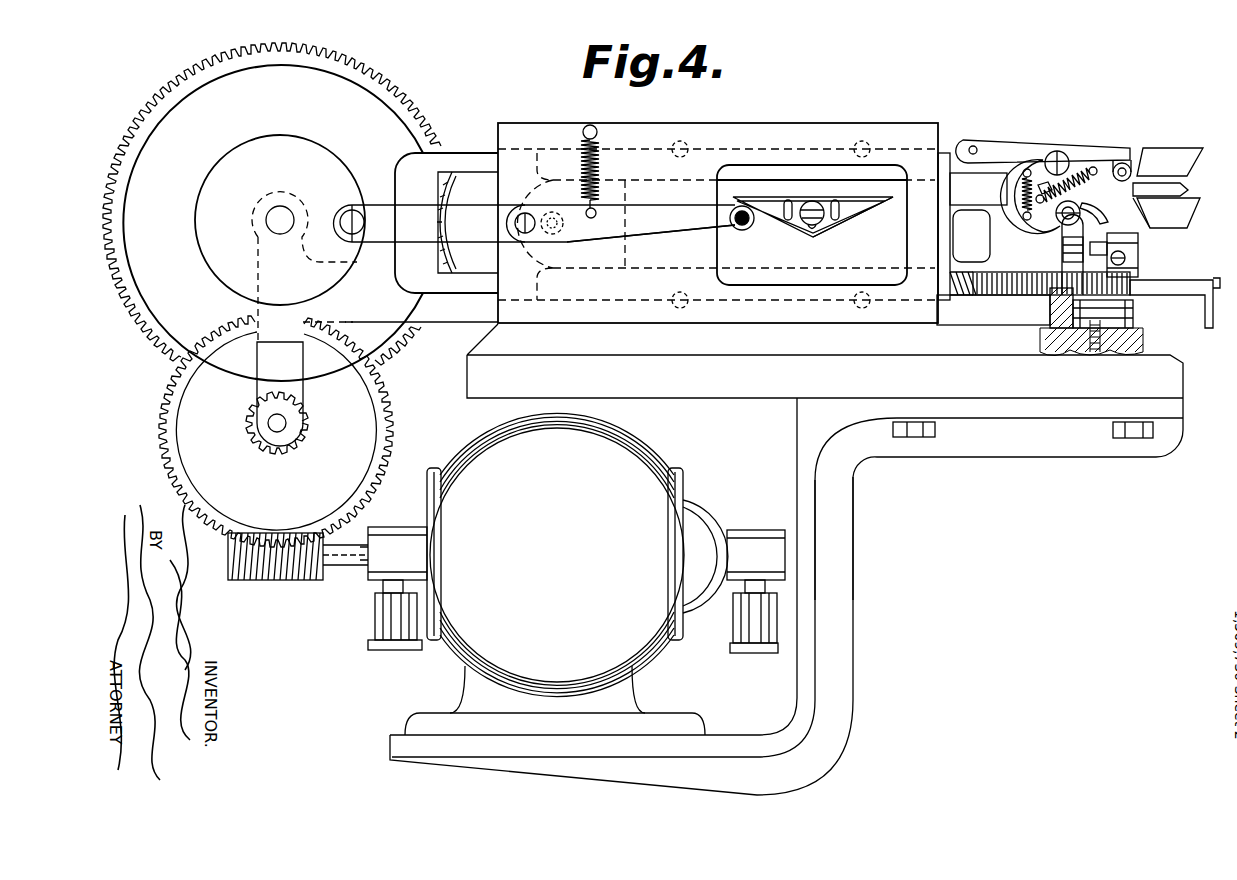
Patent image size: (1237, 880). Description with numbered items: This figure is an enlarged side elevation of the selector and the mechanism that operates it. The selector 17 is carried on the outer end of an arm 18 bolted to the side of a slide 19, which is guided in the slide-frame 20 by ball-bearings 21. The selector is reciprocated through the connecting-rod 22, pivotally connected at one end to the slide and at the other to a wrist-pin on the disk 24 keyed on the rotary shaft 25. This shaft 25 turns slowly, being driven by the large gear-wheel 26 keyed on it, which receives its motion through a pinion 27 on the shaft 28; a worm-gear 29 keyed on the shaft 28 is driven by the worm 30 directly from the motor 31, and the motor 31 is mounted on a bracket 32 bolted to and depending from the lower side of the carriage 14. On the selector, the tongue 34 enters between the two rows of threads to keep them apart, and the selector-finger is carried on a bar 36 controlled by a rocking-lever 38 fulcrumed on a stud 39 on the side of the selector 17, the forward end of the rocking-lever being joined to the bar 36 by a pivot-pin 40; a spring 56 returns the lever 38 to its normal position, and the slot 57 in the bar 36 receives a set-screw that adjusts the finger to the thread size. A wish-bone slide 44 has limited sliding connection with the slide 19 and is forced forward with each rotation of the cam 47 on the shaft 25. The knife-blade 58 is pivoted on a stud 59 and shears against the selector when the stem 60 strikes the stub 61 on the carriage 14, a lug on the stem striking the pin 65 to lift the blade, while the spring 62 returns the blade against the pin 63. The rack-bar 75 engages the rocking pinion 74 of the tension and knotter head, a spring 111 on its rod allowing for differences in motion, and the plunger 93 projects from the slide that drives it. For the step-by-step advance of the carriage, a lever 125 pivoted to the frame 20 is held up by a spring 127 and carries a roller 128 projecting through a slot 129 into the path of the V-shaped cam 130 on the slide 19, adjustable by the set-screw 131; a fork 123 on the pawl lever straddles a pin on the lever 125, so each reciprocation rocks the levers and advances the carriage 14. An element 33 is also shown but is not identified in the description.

The carriage 14 is at (779, 389).
The selector 17 is at (1120, 163).
The arm 18 is at (953, 190).
The slide 19 is at (793, 172).
The slide-frame 20 is at (739, 134).
The ball-bearings 21 is at (685, 143).
The connecting-rod 22 is at (430, 223).
The disk 24 is at (285, 143).
The rotary shaft 25 is at (274, 221).
The large gear-wheel 26 is at (163, 338).
The pinion 27 is at (271, 446).
The shaft 28 is at (287, 424).
The worm-gear 29 is at (388, 408).
The worm 30 is at (292, 578).
The motor 31 is at (572, 554).
The bracket 32 is at (808, 647).
The blade 33 is at (1190, 178).
The tongue 34 is at (1160, 177).
The bar 36 is at (1118, 241).
The rocking-lever 38 is at (1007, 137).
The stud 39 is at (1055, 158).
The pivot-pin 40 is at (1133, 156).
The wish-bone slide 44 is at (468, 160).
The cam 47 is at (358, 297).
The spring 56 is at (1084, 167).
The elliptical countersunk slot 57 is at (1077, 259).
The knife-blade 58 is at (1140, 203).
The stud 59 is at (1056, 222).
The stem 60 is at (1082, 232).
The stub 61 is at (1047, 313).
The spring 62 is at (1022, 193).
The pin 63 is at (1043, 184).
The pin 65 is at (1096, 210).
The rocking pinion 74 is at (1128, 296).
The rack-bar 75 is at (1031, 292).
The plunger 93 is at (952, 244).
The spring 111 is at (961, 292).
The fork 123 is at (735, 228).
The lever 125 is at (621, 223).
The spring 127 is at (599, 154).
The roller 128 is at (744, 232).
The slot 129 is at (856, 232).
The V-shaped cam 130 is at (868, 206).
The set-screw 131 is at (810, 229).